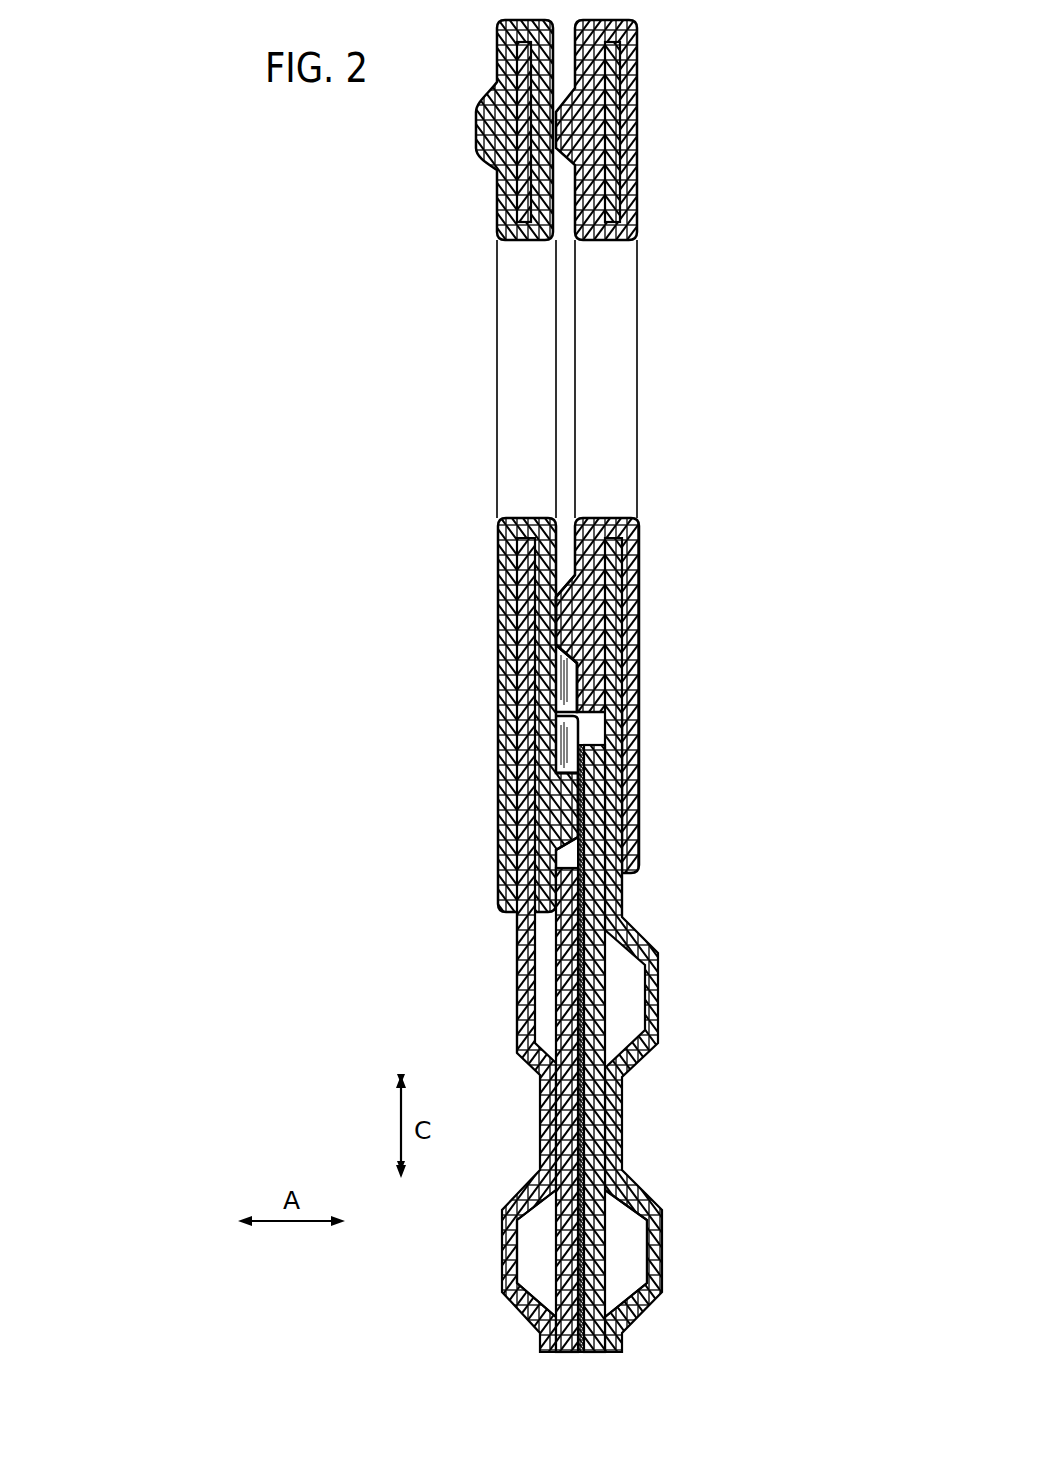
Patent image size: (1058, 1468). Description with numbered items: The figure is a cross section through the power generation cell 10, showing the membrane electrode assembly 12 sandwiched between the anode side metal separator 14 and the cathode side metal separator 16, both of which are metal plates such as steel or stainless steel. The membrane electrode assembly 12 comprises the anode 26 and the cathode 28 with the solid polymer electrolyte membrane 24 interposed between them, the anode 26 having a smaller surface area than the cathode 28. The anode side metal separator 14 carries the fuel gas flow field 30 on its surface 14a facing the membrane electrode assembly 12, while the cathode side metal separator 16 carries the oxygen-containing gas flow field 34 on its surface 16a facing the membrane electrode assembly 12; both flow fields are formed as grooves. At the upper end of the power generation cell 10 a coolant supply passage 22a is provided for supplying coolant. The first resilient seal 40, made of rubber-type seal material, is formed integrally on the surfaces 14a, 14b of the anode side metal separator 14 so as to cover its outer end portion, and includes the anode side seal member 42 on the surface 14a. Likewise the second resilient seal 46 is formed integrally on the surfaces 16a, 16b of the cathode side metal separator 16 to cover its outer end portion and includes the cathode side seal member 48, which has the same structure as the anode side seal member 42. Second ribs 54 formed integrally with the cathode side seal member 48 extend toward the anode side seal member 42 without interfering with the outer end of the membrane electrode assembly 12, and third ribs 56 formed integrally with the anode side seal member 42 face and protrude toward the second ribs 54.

The power generation cell 10 is at (342, 134).
The membrane electrode assembly 12 is at (514, 1048).
The anode side metal separator 14 is at (552, 918).
The surface of anode side metal separator facing the membrane electrode assembly 14a is at (535, 945).
The surface of anode side metal separator 14b is at (518, 928).
The cathode side metal separator 16 is at (588, 918).
The surface of cathode side metal separator facing the membrane electrode assembly 16a is at (608, 912).
The surface of cathode side metal separator 16b is at (623, 890).
The coolant supply passage 22a is at (605, 386).
The solid polymer electrolyte membrane 24 is at (580, 1018).
The anode 26 is at (568, 972).
The cathode 28 is at (598, 1046).
The fuel gas flow field 30 is at (536, 1253).
The oxygen-containing gas flow field 34 is at (625, 1253).
The first resilient seal 40 is at (513, 33).
The anode side seal member 42 is at (568, 800).
The second resilient seal 46 is at (623, 36).
The cathode side seal member 48 is at (568, 624).
The second ribs 54 is at (562, 680).
The third ribs 56 is at (567, 743).